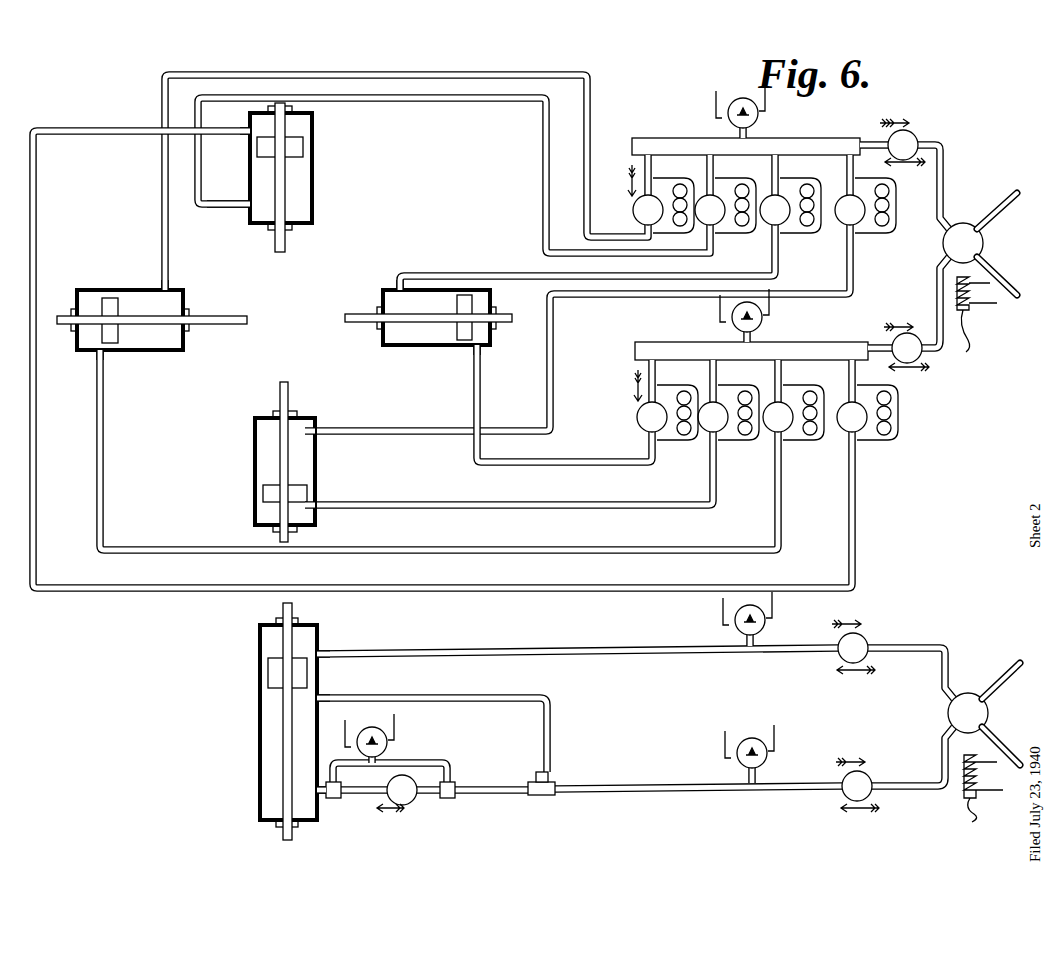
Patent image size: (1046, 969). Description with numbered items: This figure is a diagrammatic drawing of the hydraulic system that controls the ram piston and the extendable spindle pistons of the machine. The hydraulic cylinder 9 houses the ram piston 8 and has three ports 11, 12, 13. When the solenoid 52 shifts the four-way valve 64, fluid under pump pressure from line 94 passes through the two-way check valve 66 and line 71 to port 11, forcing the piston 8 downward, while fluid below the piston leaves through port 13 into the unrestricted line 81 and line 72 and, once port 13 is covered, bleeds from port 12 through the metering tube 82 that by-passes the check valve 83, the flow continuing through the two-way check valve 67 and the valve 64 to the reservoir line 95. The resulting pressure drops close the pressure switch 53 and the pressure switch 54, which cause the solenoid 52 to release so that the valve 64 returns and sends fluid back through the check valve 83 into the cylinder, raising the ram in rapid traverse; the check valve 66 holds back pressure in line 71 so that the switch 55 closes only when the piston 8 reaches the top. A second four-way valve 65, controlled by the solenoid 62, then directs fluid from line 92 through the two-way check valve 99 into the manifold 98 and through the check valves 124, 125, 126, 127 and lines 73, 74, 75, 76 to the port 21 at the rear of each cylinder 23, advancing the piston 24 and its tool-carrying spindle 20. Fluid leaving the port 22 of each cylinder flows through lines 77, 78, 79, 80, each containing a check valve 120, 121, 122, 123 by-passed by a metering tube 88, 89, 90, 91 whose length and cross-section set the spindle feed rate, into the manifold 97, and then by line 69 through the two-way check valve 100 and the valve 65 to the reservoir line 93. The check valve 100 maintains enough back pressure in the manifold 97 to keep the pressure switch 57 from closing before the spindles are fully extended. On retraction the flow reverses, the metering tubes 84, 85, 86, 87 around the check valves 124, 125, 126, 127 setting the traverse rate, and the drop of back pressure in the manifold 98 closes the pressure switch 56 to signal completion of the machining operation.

The ram piston 8 is at (268, 676).
The hydraulic cylinder 9 is at (258, 740).
The port 11 is at (319, 648).
The port 12 is at (322, 798).
The port 13 is at (320, 694).
The extendable tool carrying spindle 20 is at (286, 242).
The port 21 is at (246, 130).
The port 22 is at (244, 203).
The cylinder 23 is at (314, 180).
The piston 24 is at (300, 150).
The solenoid 52 is at (983, 792).
The pressure switch 53 is at (388, 738).
The pressure switch 54 is at (768, 756).
The pressure switch 55 is at (765, 622).
The pressure switch 56 is at (762, 322).
The pressure switch 57 is at (758, 116).
The solenoid 62 is at (976, 323).
The four way valve 64 is at (990, 712).
The four way valve 65 is at (984, 244).
The two way check valve 66 is at (866, 636).
The two way check valve 67 is at (868, 772).
The line 69 is at (944, 152).
The line 71 is at (627, 646).
The line 72 is at (633, 784).
The line 73 is at (608, 462).
The line 74 is at (687, 498).
The line 75 is at (757, 536).
The line 76 is at (839, 574).
The line 77 is at (584, 150).
The line 78 is at (540, 152).
The line 79 is at (768, 272).
The line 80 is at (856, 290).
The unrestricted line 81 is at (496, 696).
The metering tube 82 is at (422, 762).
The check valve 83 is at (412, 806).
The metering tube 84 is at (694, 386).
The metering tube 85 is at (762, 386).
The metering tube 86 is at (826, 386).
The metering tube 87 is at (890, 398).
The by-pass metering tube 88 is at (688, 185).
The by-pass metering tube 89 is at (752, 185).
The by-pass metering tube 90 is at (826, 185).
The by-pass metering tube 91 is at (888, 182).
The line 92 is at (1004, 196).
The reservoir line 93 is at (1012, 312).
The line 94 is at (1010, 670).
The reservoir line 95 is at (1020, 760).
The manifold 97 is at (680, 137).
The manifold 98 is at (680, 341).
The two way check valve 99 is at (924, 318).
The two way check valve 100 is at (908, 128).
The check valve 120 is at (640, 216).
The check valve 121 is at (702, 224).
The check valve 122 is at (767, 224).
The check valve 123 is at (841, 225).
The check valve 124 is at (644, 422).
The check valve 125 is at (707, 432).
The check valve 126 is at (772, 432).
The check valve 127 is at (846, 432).